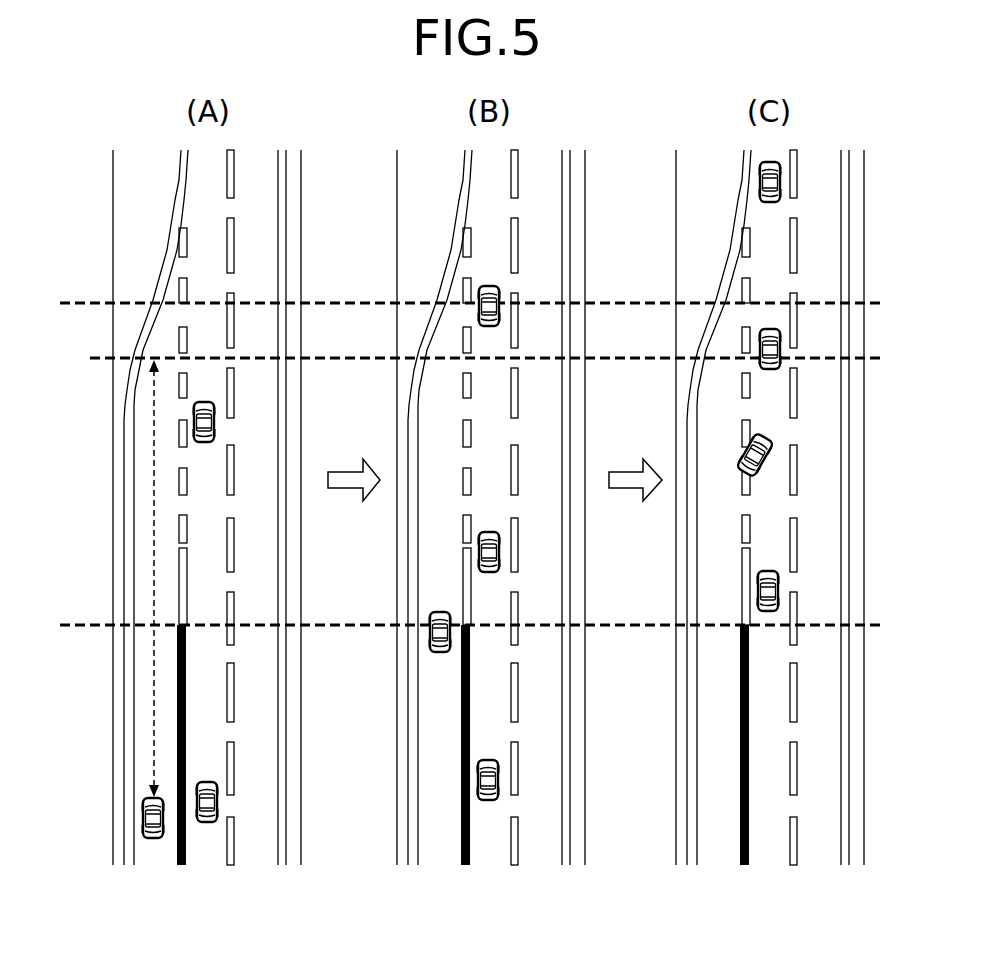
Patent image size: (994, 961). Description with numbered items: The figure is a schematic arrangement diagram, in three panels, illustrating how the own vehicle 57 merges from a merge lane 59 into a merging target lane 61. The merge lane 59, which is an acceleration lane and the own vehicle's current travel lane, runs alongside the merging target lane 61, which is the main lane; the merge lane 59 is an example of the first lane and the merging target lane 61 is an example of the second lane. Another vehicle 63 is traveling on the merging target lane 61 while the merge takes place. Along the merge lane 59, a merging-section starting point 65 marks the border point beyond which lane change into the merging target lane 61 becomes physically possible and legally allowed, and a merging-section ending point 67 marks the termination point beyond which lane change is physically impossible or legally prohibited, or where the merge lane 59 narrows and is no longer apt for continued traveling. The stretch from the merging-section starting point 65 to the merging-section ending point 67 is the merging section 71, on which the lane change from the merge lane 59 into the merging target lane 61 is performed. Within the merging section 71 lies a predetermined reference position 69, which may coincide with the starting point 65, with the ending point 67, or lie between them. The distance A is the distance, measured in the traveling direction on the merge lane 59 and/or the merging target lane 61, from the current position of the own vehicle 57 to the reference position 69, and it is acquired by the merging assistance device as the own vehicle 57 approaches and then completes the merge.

The own vehicle 57 is at (143, 808).
The merge lane 59 is at (437, 540).
The merging target lane 61 is at (495, 548).
The another vehicle 63 is at (215, 430).
The merging-section starting point 65 is at (90, 628).
The merging-section ending point 67 is at (90, 305).
The reference position 69 is at (97, 360).
The merging section 71 is at (73, 625).
The distance A is at (154, 526).